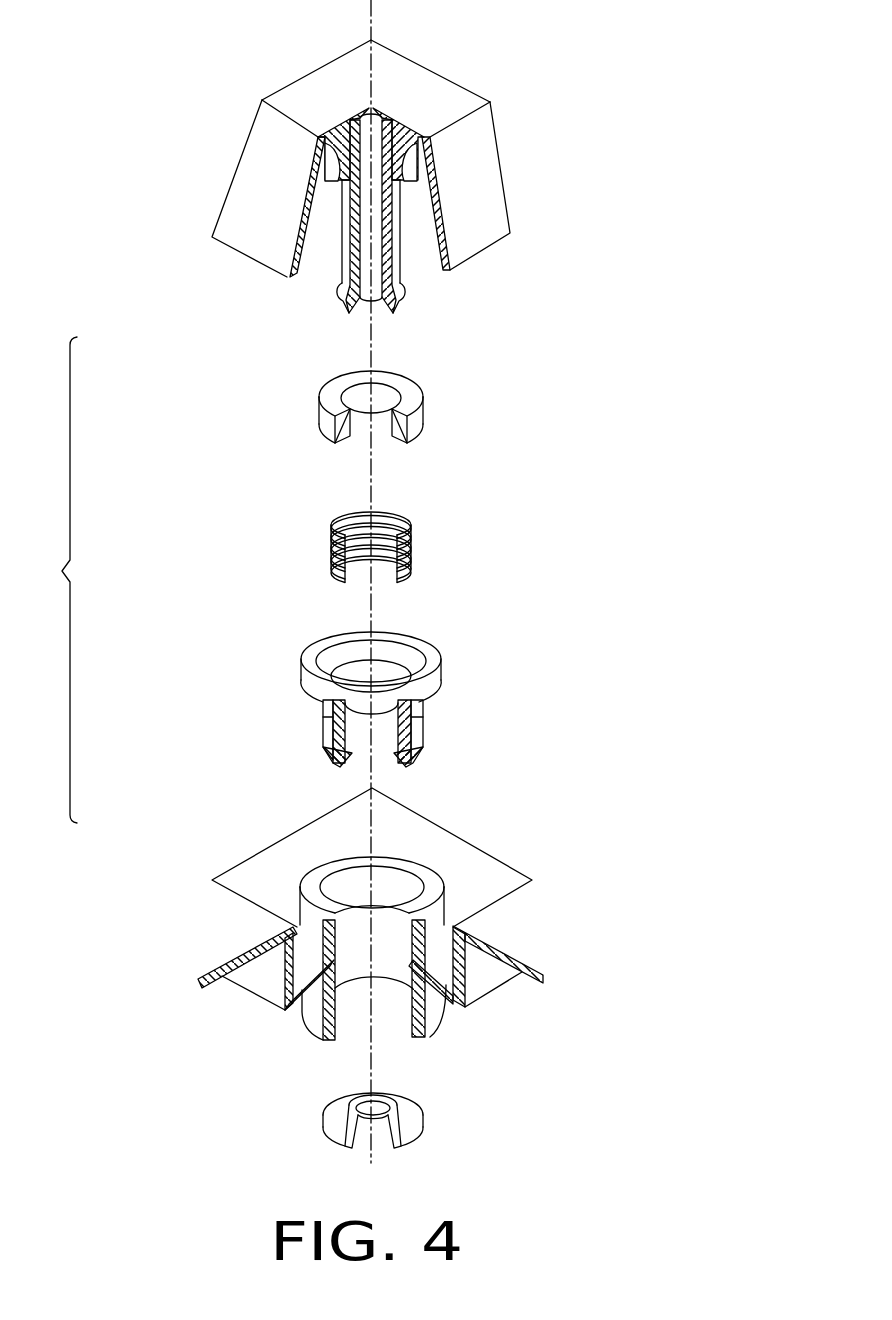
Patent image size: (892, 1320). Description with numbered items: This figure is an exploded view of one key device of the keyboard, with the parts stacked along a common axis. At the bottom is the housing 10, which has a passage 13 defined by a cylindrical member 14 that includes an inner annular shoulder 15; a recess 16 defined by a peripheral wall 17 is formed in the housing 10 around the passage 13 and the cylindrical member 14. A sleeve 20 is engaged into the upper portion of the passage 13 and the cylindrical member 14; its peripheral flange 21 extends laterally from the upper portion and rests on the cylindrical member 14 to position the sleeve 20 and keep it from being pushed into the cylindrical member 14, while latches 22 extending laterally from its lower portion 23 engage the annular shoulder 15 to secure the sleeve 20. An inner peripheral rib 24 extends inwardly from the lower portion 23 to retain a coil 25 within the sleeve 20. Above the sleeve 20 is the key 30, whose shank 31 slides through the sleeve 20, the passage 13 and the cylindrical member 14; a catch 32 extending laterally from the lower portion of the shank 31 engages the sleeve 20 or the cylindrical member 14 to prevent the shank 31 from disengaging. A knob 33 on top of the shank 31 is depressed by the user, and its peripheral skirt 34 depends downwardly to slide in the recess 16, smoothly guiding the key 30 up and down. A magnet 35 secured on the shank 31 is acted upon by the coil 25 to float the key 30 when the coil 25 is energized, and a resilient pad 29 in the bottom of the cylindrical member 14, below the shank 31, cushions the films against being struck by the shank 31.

The housing 10 is at (360, 920).
The passage 13 is at (352, 888).
The cylindrical member 14 is at (440, 1020).
The annular shoulder 15 is at (420, 965).
The recess 16 is at (240, 886).
The peripheral wall 17 is at (258, 862).
The sleeve 20 is at (403, 705).
The peripheral flange 21 is at (430, 657).
The latch 22 is at (328, 758).
The lower portion 23 is at (400, 758).
The inner peripheral rib 24 is at (397, 745).
The coil 25 is at (420, 533).
The resilient pad 29 is at (418, 1126).
The key 30 is at (414, 184).
The shank 31 is at (400, 262).
The catch 32 is at (350, 306).
The knob 33 is at (446, 66).
The peripheral skirt 34 is at (232, 240).
The magnet 35 is at (412, 400).